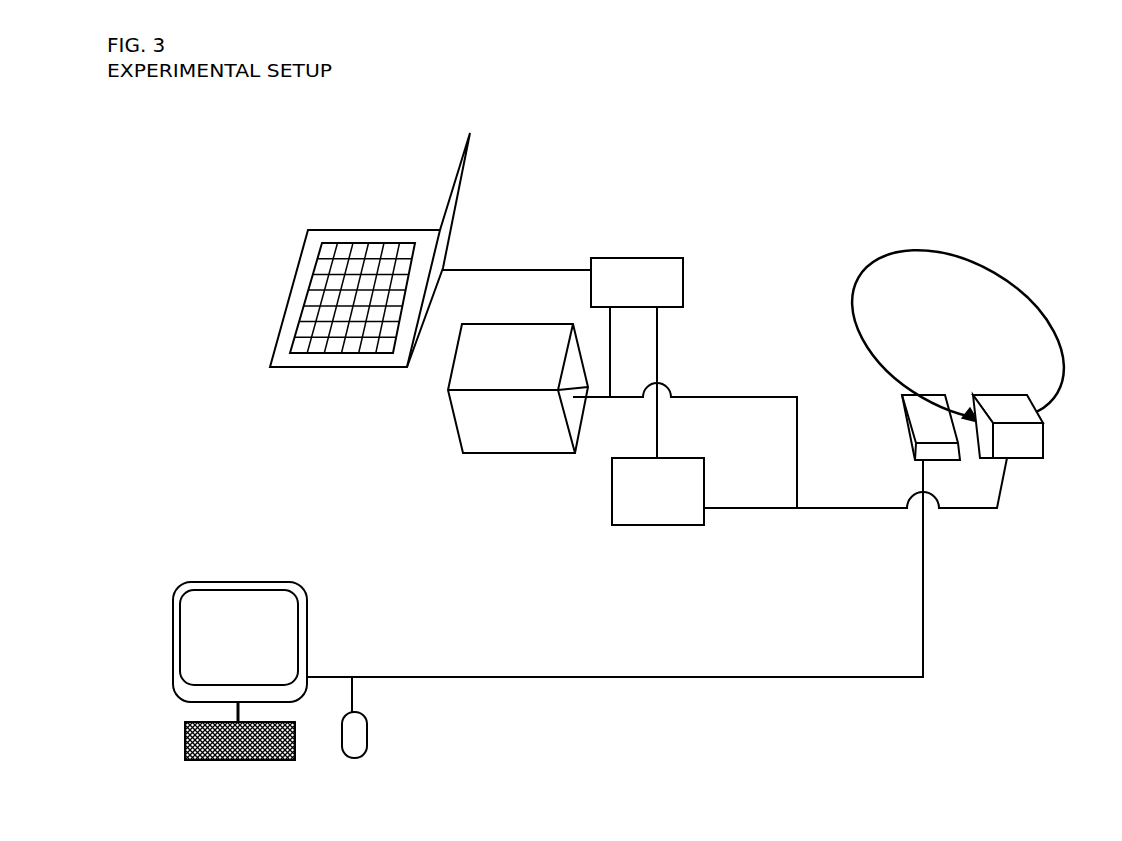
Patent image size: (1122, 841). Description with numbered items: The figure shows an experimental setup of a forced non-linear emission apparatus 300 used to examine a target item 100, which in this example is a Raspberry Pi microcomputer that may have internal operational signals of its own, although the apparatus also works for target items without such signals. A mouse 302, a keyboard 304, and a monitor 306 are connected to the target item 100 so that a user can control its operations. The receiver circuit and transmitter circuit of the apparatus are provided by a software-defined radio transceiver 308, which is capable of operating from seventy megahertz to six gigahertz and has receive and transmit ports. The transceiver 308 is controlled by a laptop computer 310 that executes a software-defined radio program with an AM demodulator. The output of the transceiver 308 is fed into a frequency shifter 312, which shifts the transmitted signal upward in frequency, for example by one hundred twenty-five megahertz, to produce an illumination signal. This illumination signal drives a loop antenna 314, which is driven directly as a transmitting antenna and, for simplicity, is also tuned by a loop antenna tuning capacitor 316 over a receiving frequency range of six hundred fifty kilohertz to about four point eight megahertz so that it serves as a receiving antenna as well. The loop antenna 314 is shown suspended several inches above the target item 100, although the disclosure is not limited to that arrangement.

The forced non-linear emission apparatus 300 is at (878, 110).
The mouse 302 is at (342, 735).
The keyboard 304 is at (185, 735).
The monitor 306 is at (190, 582).
The software-defined radio transceiver 308 is at (610, 258).
The laptop computer 310 is at (352, 228).
The frequency shifter 312 is at (612, 510).
The loop antenna 314 is at (918, 257).
The loop antenna tuning capacitor 316 is at (460, 435).
The target item 100 is at (900, 420).